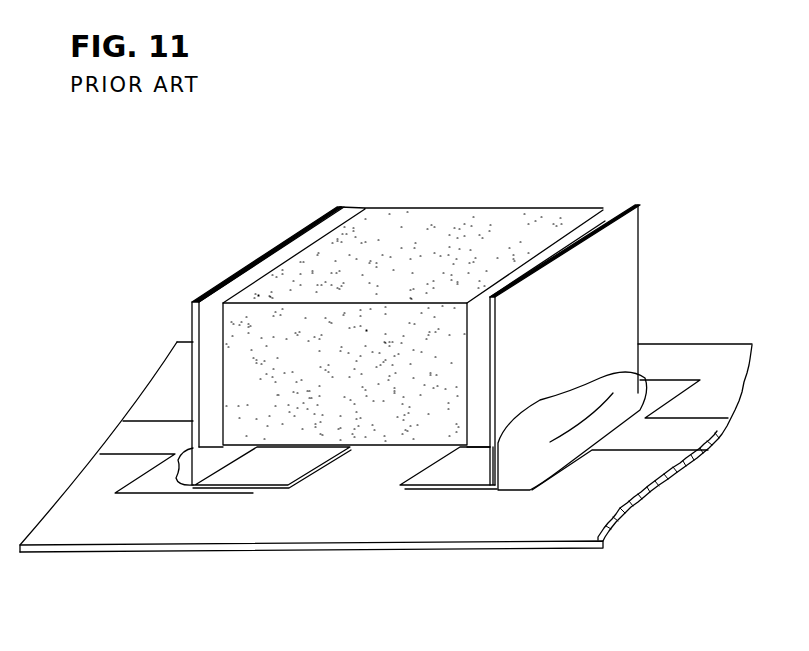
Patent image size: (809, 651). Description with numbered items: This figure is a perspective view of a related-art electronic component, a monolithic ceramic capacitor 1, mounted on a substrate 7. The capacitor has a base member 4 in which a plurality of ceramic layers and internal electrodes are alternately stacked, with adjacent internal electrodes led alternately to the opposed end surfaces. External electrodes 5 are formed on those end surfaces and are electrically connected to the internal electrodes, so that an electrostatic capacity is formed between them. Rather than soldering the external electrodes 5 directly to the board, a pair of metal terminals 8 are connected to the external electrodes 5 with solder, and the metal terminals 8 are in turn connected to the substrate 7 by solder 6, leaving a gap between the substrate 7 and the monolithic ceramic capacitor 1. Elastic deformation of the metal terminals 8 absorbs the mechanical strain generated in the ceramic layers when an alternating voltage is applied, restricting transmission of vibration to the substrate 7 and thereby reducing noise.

The monolithic ceramic capacitor 1 is at (433, 190).
The base member 4 is at (488, 225).
The external electrodes 5 is at (348, 210).
The solder 6 is at (640, 385).
The substrate 7 is at (447, 523).
The metal terminals 8 is at (617, 275).